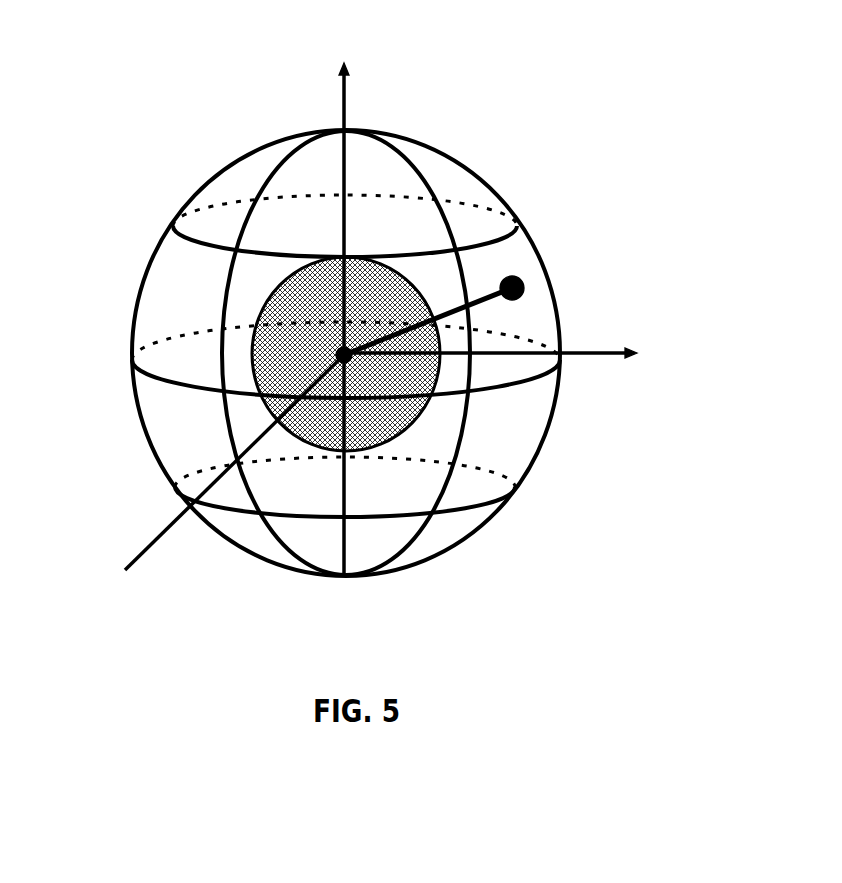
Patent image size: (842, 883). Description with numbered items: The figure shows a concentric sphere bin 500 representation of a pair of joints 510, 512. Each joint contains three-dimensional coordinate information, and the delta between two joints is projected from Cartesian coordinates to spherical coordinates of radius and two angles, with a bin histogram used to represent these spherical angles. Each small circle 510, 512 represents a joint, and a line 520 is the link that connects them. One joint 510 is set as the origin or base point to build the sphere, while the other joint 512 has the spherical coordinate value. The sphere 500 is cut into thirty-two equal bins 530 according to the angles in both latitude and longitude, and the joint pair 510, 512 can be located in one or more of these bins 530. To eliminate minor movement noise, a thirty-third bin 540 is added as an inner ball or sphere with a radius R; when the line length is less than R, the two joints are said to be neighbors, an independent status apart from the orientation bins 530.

The concentric sphere bin 500 is at (368, 308).
The joint 510 is at (374, 388).
The joint 512 is at (540, 267).
The line 520 is at (440, 333).
The bins 530 is at (444, 542).
The 33rd bin 540 is at (230, 372).